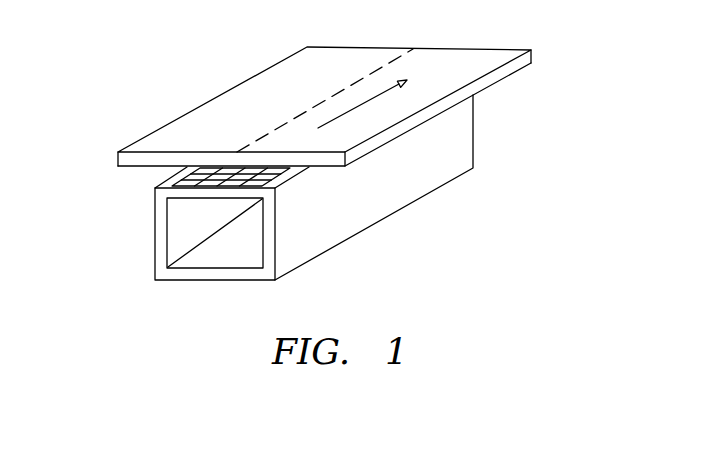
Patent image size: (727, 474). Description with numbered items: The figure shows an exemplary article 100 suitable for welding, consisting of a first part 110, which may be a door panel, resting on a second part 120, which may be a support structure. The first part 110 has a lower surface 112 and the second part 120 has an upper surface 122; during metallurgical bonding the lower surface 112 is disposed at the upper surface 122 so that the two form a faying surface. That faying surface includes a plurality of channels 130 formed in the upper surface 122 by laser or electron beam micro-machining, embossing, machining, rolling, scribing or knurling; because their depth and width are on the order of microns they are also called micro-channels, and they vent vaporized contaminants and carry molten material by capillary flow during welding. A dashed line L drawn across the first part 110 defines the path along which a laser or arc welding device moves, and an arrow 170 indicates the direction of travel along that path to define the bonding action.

The article 100 is at (137, 41).
The first part 110 is at (532, 50).
The lower surface 112 is at (136, 169).
The second part 120 is at (406, 207).
The upper surface 122 is at (280, 173).
The channels 130 is at (180, 177).
The arrow 170 is at (373, 98).
The line L is at (282, 127).